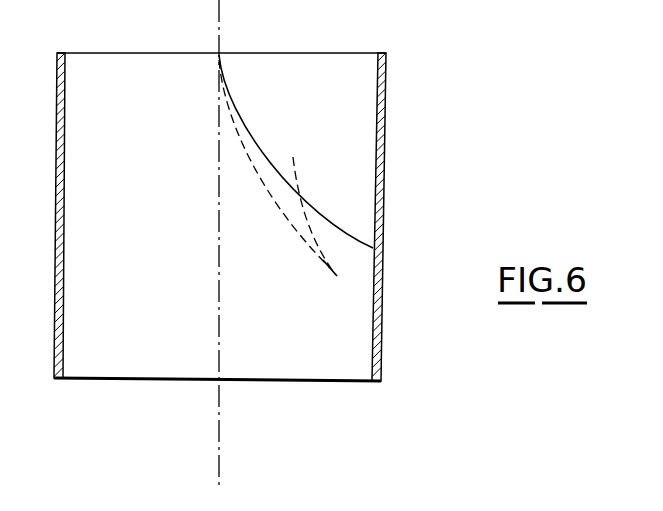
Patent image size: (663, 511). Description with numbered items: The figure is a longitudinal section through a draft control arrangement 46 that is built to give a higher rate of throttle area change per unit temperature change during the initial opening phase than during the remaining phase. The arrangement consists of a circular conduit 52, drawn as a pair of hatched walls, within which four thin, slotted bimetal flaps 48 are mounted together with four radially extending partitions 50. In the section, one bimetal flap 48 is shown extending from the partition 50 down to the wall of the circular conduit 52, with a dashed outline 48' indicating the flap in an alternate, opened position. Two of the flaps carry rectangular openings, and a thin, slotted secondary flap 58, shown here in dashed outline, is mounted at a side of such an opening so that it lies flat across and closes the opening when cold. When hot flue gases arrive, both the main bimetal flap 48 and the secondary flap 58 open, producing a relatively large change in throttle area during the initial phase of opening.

The draft control arrangement 46 is at (276, 194).
The bimetal flap 48 is at (324, 184).
The bimetal flap in opened position 48' is at (278, 168).
The radially extending partition 50 is at (296, 53).
The circular conduit 52 is at (383, 212).
The secondary flap 58 is at (296, 166).